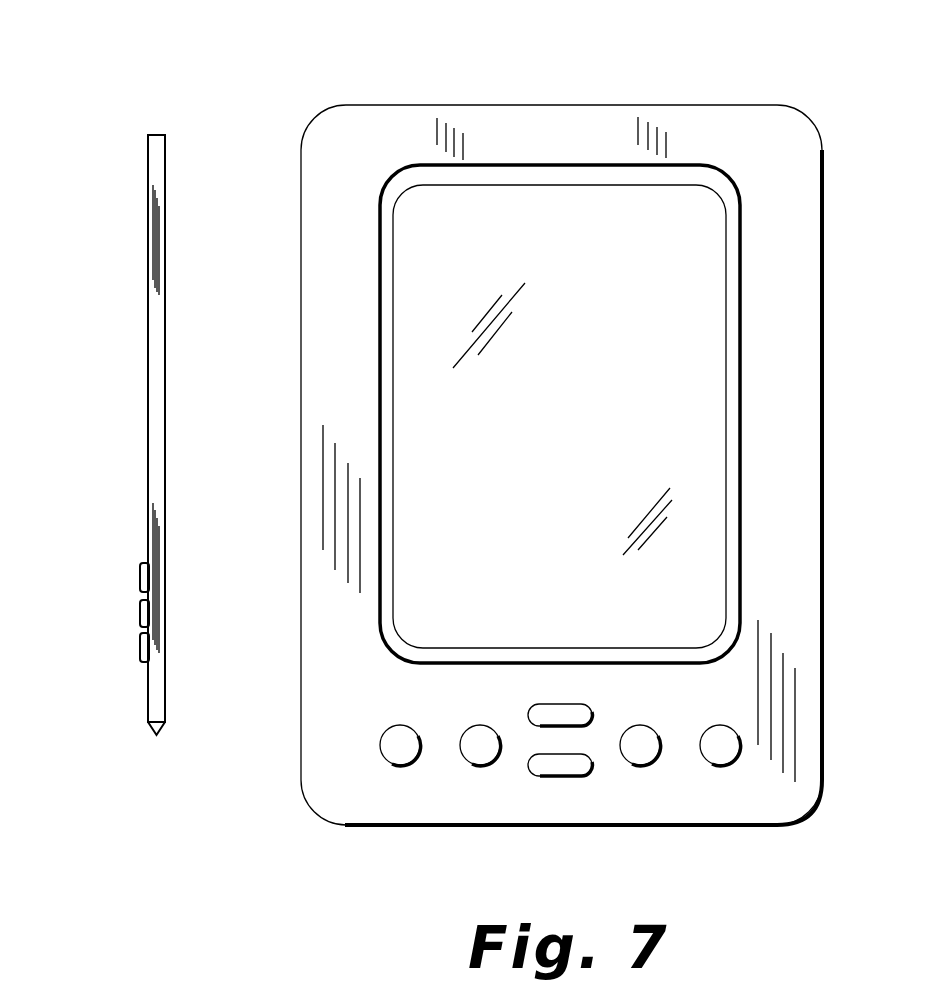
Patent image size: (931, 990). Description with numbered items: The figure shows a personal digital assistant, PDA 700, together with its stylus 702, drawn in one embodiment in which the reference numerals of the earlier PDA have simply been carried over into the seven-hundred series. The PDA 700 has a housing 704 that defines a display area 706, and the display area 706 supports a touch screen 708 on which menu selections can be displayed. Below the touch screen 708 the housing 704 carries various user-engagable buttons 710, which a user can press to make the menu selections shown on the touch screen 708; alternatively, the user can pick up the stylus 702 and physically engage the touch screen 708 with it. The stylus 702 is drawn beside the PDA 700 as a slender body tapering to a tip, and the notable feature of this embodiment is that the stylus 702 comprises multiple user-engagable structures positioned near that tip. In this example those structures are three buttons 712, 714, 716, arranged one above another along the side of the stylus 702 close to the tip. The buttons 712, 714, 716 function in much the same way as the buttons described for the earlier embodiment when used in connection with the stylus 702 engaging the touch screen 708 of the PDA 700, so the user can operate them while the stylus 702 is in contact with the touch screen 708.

The PDA 700 is at (388, 38).
The stylus 702 is at (156, 135).
The housing 704 is at (559, 105).
The display area 706 is at (559, 165).
The touch screen 708 is at (582, 426).
The user-engagable buttons 710 is at (403, 700).
The button 712 is at (141, 572).
The button 714 is at (141, 606).
The button 716 is at (141, 641).